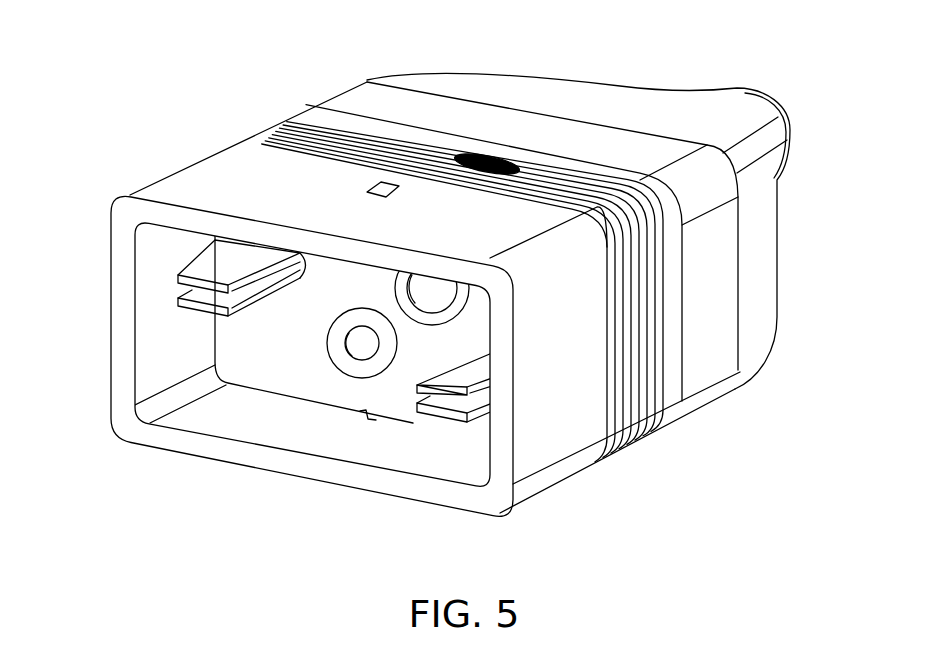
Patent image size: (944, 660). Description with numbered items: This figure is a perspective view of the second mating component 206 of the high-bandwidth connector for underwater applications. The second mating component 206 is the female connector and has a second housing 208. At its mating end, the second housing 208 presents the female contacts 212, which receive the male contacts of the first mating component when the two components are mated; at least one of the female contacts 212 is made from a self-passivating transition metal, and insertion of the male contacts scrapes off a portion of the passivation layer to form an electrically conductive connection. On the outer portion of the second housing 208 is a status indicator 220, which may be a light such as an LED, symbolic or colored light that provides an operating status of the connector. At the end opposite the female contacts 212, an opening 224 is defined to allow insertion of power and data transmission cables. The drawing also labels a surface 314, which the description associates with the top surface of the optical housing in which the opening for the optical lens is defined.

The second mating component 206 is at (173, 75).
The second housing 208 is at (763, 153).
The female contacts 212 is at (188, 305).
The status indicator 220 is at (489, 140).
The opening 224 is at (789, 118).
The surface of the optical housing 314 is at (363, 373).